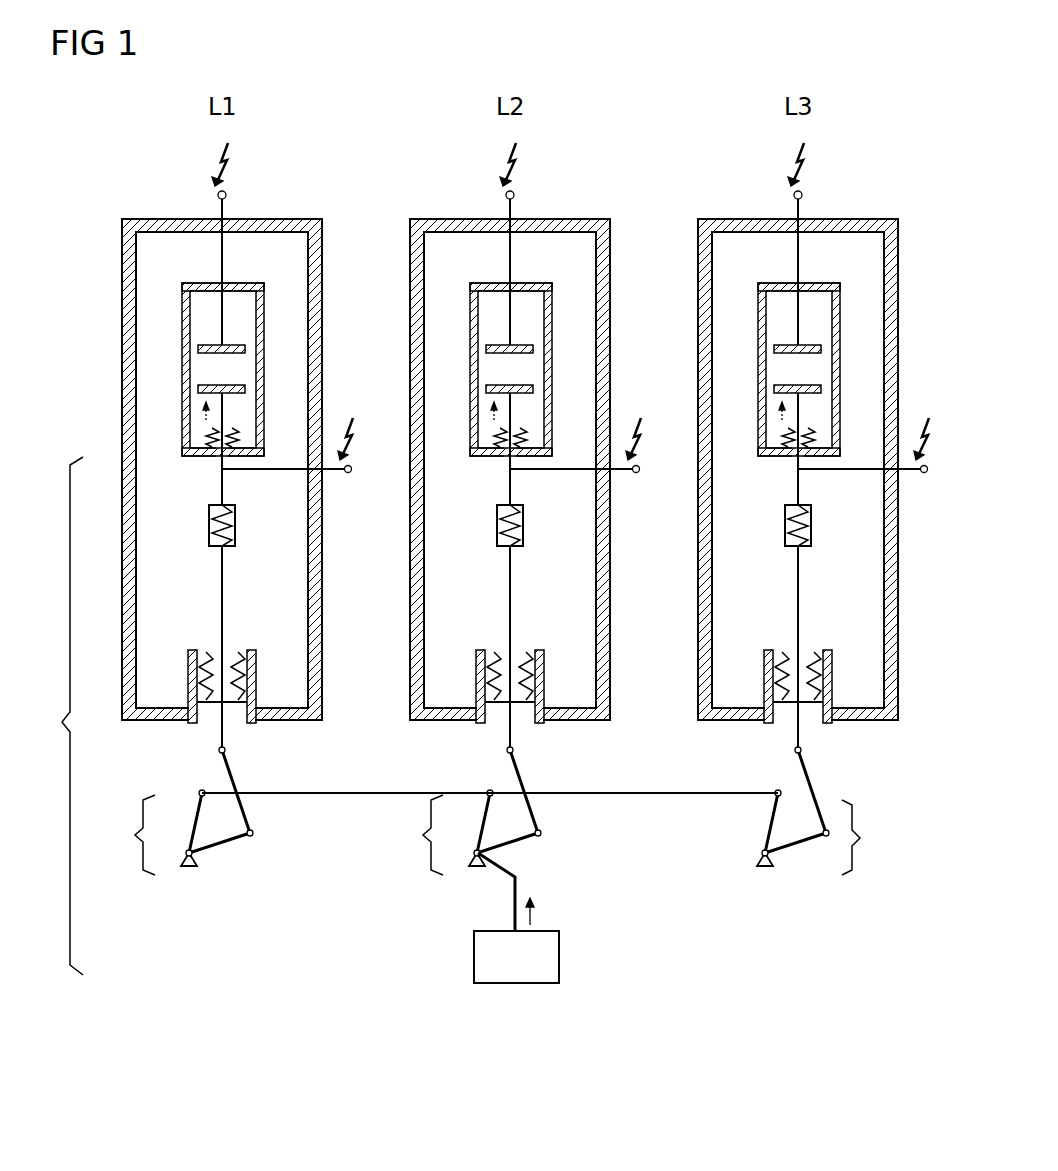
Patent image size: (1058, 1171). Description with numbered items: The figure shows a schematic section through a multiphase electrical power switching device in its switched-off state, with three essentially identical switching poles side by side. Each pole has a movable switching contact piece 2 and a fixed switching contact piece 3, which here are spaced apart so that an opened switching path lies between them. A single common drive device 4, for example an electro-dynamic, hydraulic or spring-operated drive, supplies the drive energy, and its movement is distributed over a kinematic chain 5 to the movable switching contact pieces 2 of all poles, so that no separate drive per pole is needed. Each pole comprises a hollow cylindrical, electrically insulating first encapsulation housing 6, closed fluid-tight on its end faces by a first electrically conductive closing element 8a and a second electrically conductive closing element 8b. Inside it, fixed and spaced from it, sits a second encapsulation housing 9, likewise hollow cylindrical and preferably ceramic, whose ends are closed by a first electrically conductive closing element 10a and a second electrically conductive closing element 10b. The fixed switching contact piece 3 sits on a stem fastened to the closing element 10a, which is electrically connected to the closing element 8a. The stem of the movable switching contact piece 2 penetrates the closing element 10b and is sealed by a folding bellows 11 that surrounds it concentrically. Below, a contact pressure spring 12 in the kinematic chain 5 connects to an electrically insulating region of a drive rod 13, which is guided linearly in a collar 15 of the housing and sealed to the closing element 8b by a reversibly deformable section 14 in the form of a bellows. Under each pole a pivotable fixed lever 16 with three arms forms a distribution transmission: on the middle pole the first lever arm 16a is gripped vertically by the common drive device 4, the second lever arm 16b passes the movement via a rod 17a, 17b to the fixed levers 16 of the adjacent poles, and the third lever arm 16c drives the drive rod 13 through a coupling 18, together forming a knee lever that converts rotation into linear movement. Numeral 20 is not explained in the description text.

The movable switching contact piece 2 is at (205, 387).
The fixed switching contact piece 3 is at (205, 347).
The common drive device 4 is at (559, 962).
The kinematic chain 5 is at (64, 716).
The first encapsulation housing 6 is at (322, 293).
The first electrically conductive closing element 8a is at (273, 219).
The second electrically conductive closing element 8b is at (295, 720).
The second encapsulation housing 9 is at (258, 352).
The first electrically conductive closing element 10a is at (205, 283).
The second electrically conductive closing element 10b is at (196, 456).
The folding bellows 11 is at (262, 433).
The contact pressure spring 12 is at (237, 530).
The drive rod 13 is at (222, 582).
The reversibly deformable section 14 is at (250, 655).
The collar 15 is at (247, 677).
The fixed lever 16 is at (502, 835).
The first lever arm 16a is at (520, 875).
The second lever arm 16b is at (189, 856).
The third lever arm 16c is at (275, 860).
The rod 17a is at (345, 795).
The rod 17b is at (663, 795).
The coupling 18 is at (235, 780).
The bushing 20 is at (210, 722).